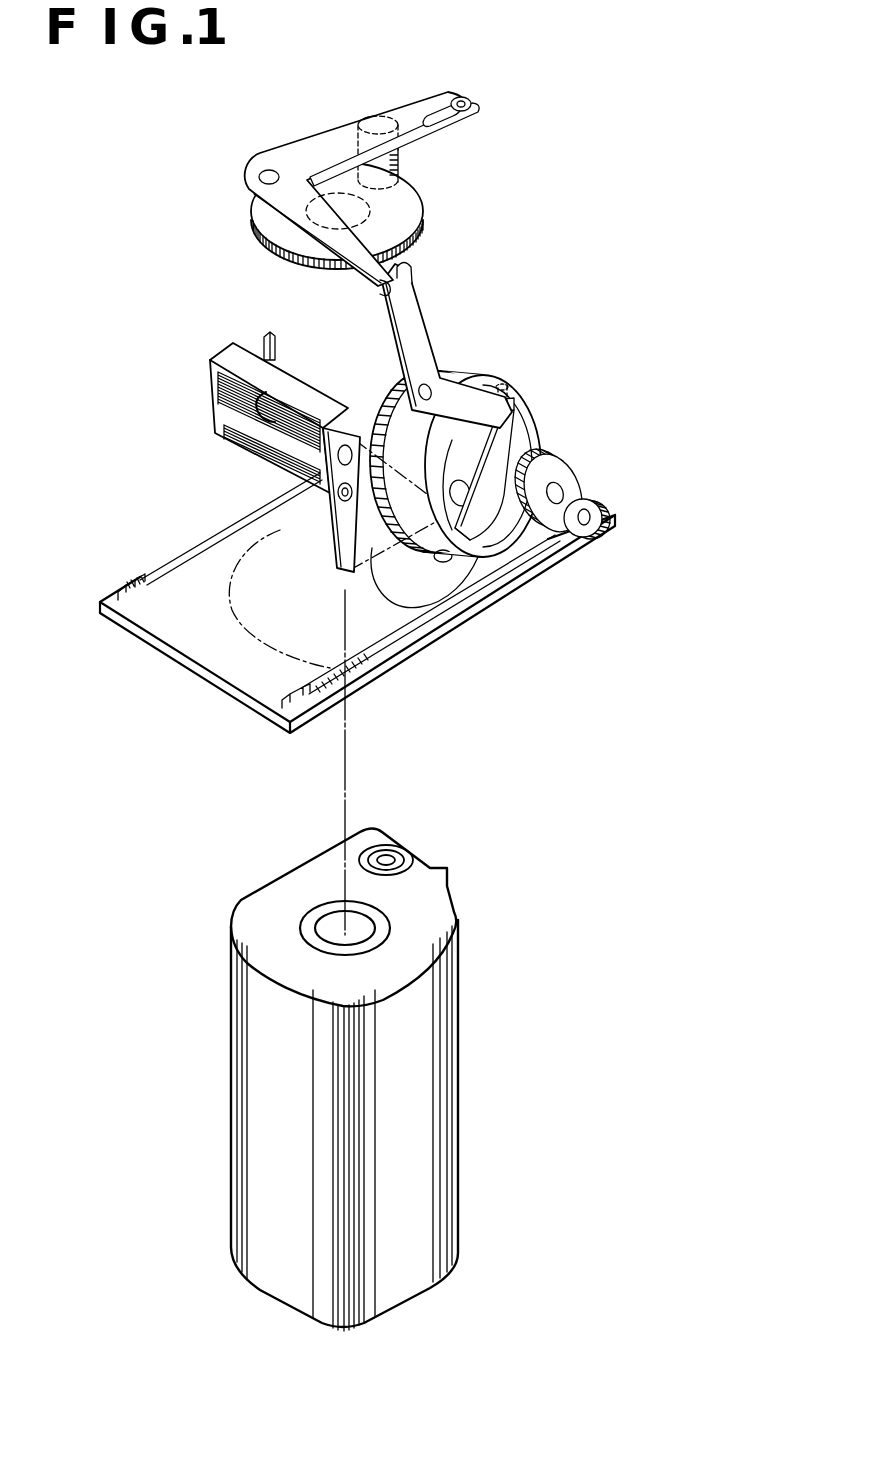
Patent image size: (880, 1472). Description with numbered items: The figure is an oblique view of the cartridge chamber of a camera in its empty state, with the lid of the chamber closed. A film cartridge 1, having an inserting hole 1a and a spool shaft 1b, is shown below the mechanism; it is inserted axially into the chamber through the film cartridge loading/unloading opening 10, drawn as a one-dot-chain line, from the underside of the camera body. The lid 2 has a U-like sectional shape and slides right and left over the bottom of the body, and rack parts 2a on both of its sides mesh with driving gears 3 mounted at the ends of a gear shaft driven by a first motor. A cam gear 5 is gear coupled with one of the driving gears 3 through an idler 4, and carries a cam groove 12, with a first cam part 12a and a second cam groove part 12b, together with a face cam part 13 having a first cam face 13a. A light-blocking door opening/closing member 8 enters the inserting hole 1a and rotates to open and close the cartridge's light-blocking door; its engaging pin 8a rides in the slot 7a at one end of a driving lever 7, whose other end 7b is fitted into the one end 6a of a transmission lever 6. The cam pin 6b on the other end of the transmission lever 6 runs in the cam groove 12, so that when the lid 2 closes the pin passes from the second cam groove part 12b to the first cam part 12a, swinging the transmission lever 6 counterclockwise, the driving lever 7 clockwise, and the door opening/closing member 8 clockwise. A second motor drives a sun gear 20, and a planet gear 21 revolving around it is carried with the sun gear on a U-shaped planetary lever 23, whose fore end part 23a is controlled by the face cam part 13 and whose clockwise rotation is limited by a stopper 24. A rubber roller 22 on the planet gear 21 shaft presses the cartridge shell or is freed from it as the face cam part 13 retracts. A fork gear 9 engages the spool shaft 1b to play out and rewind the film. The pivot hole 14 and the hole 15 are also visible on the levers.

The film cartridge 1 is at (415, 1085).
The inserting hole 1a is at (386, 860).
The spool shaft 1b is at (325, 925).
The lid 2 is at (195, 640).
The rack parts 2a is at (135, 578).
The driving gears 3 is at (600, 512).
The idler 4 is at (575, 478).
The cam gear 5 is at (515, 388).
The transmission lever 6 is at (420, 338).
The one end of transmission lever 6a is at (412, 270).
The cam pin 6b is at (498, 388).
The driving lever 7 is at (318, 150).
The slot 7a is at (442, 105).
The other end of driving lever 7b is at (362, 262).
The light-blocking door opening/closing member 8 is at (452, 140).
The engaging pin 8a is at (458, 98).
The fork gear 9 is at (280, 222).
The film cartridge loading/unloading opening 10 is at (272, 650).
The cam groove 12 is at (505, 445).
The first cam part 12a is at (510, 423).
The second cam groove part 12b is at (487, 540).
The face cam part 13 is at (460, 550).
The first cam face 13a is at (418, 565).
The pivot hole 14 is at (270, 175).
The hole 15 is at (432, 388).
The sun gear 20 is at (322, 490).
The planet gear 21 is at (303, 452).
The roller 22 is at (222, 393).
The planetary lever 23 is at (305, 392).
The fore end part 23a is at (400, 600).
The stopper 24 is at (283, 348).